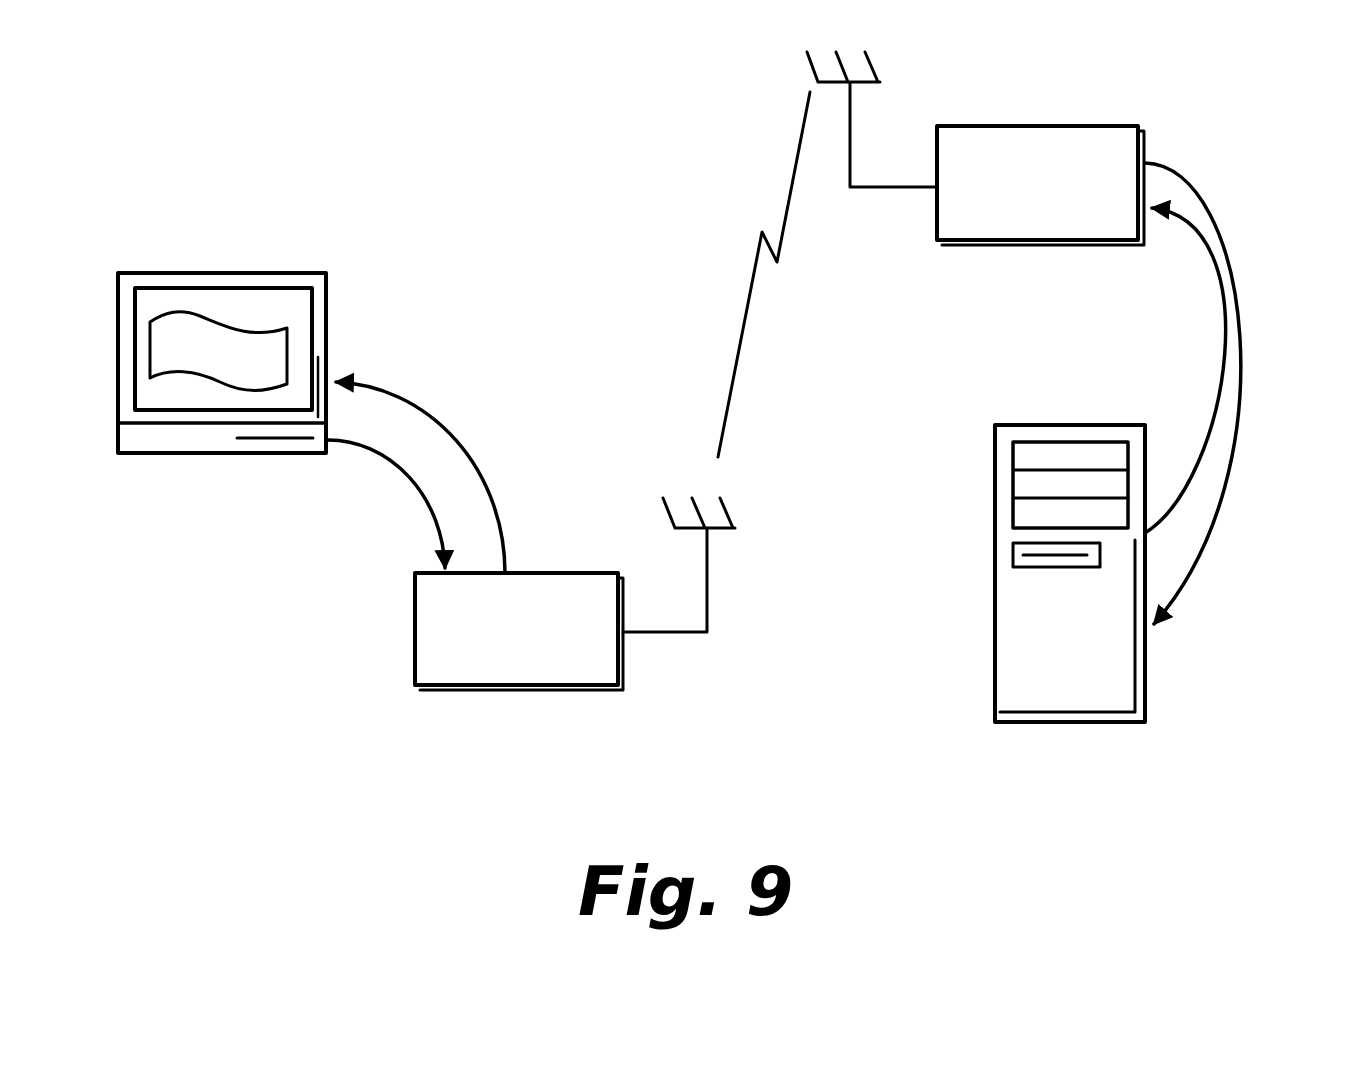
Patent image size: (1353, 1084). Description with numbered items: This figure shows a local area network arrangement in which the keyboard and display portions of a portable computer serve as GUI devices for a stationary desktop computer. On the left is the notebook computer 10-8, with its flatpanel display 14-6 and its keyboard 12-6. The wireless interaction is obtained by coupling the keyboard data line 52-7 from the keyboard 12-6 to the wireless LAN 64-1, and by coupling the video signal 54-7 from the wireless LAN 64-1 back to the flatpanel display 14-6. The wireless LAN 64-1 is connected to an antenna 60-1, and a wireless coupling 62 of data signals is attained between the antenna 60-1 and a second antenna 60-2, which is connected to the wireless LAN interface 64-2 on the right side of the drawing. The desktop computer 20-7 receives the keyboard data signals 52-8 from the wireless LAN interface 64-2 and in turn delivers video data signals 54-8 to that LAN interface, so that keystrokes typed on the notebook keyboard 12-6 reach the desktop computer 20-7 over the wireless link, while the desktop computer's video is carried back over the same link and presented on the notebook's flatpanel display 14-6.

The notebook computer 10-8 is at (156, 273).
The flatpanel display 14-6 is at (282, 306).
The keyboard 12-6 is at (190, 458).
The video signal 54-7 is at (442, 420).
The keyboard data line 52-7 is at (408, 487).
The wireless LAN 64-1 is at (508, 698).
The antenna 60-1 is at (740, 510).
The wireless coupling 62 is at (752, 255).
The antenna 60-2 is at (805, 68).
The wireless LAN interface 64-2 is at (1006, 252).
The video data signals 54-8 is at (1218, 416).
The keyboard data signals 52-8 is at (1220, 536).
The desktop computer 20-7 is at (990, 632).